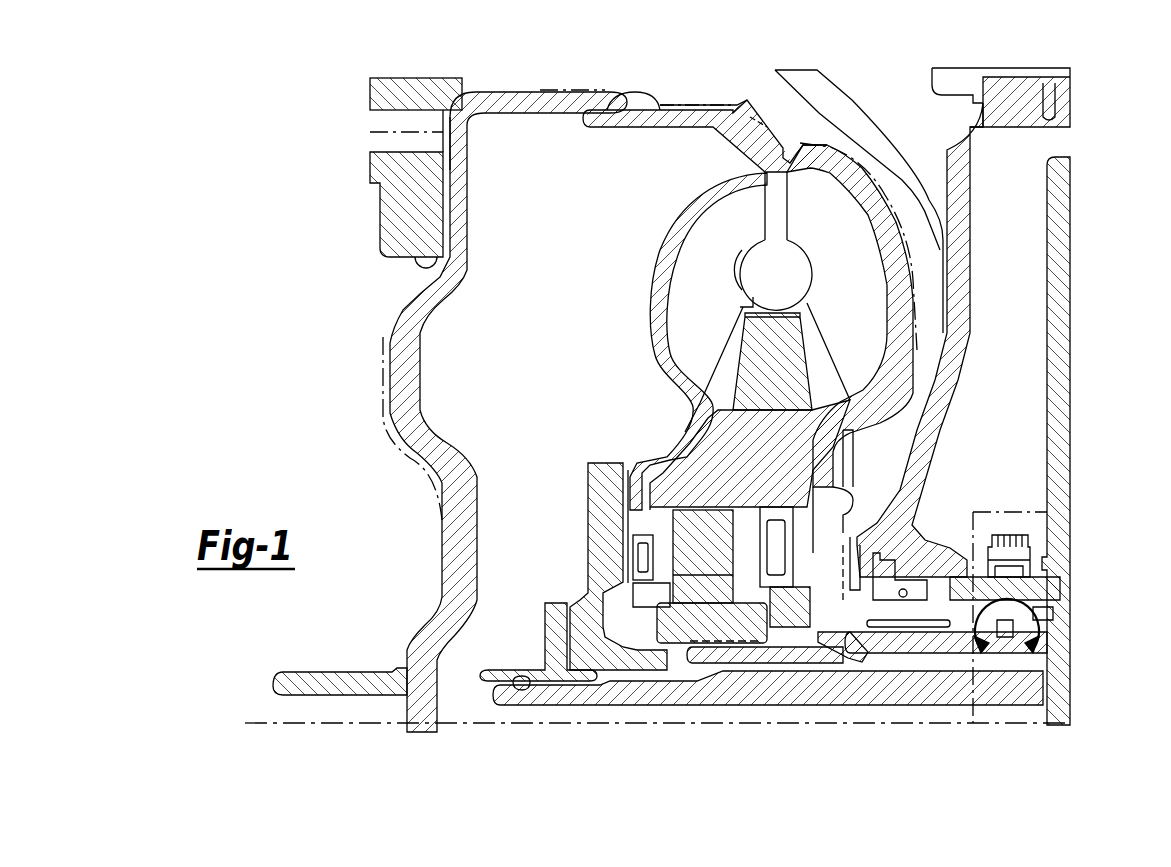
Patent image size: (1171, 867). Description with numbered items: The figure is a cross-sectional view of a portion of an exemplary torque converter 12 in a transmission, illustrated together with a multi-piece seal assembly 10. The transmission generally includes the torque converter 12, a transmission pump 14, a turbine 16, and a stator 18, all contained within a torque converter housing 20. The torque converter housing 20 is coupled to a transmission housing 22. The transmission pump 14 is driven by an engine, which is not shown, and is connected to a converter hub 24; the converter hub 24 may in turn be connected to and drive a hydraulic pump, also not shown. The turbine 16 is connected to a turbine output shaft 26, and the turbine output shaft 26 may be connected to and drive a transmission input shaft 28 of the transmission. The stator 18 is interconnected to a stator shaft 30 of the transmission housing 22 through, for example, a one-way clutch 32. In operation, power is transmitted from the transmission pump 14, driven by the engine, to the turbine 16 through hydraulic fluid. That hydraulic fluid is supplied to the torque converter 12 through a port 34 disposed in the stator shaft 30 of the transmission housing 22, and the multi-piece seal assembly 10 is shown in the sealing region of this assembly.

The multi-piece seal assembly 10 is at (1018, 619).
The torque converter 12 is at (758, 95).
The transmission pump 14 is at (853, 310).
The turbine 16 is at (693, 228).
The stator 18 is at (753, 360).
The torque converter housing 20 is at (843, 92).
The transmission housing 22 is at (1055, 228).
The converter hub 24 is at (852, 612).
The turbine output shaft 26 is at (600, 506).
The transmission input shaft 28 is at (742, 698).
The stator shaft 30 is at (928, 643).
The one-way clutch 32 is at (700, 545).
The port 34 is at (860, 657).